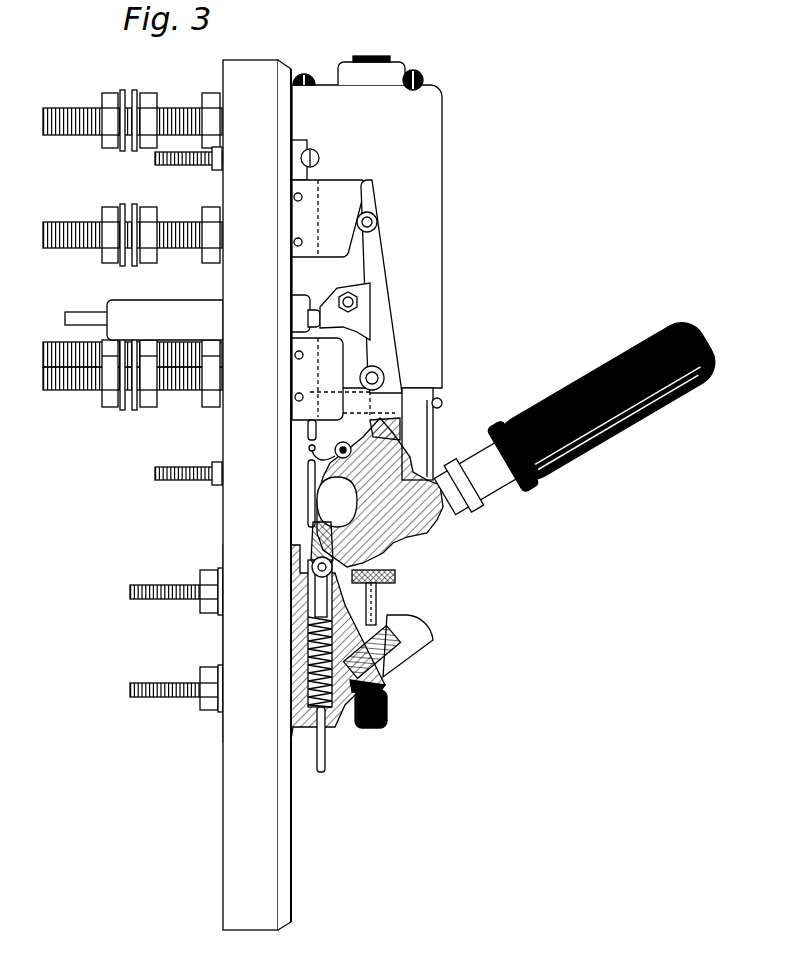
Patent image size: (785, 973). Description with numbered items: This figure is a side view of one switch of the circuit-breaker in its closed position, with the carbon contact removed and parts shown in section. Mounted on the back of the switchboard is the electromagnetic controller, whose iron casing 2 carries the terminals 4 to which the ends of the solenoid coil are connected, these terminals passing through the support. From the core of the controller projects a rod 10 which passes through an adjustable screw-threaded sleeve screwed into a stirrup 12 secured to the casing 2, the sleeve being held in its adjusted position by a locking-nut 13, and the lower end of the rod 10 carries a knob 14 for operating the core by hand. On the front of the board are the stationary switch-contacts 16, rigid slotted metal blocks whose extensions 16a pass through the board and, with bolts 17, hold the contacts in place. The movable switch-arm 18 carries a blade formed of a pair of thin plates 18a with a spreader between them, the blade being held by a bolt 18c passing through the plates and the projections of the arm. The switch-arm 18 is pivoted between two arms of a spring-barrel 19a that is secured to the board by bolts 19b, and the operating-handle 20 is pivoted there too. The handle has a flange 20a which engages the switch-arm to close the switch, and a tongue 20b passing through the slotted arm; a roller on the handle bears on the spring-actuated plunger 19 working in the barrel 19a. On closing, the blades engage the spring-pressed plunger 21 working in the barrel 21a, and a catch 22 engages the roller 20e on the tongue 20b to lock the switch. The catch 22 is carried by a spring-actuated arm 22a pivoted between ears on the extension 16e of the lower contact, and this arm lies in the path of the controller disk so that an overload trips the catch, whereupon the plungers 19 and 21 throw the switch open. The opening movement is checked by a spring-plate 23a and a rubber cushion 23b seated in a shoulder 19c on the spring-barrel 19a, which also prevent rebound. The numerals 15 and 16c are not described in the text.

The iron casing 2 is at (379, 236).
The terminals 4 is at (132, 240).
The rod 10 is at (378, 612).
The stirrup 12 is at (433, 437).
The locking-nut 13 is at (395, 552).
The knob 14 is at (371, 721).
The cap 15 is at (358, 61).
The stationary switch-contacts 16 is at (333, 188).
The extensions 16a is at (132, 254).
The pivot pin 16c is at (300, 463).
The extension of the lower stationary contact member 16e is at (308, 478).
The bolts 17 is at (188, 316).
The switch-arm 18 is at (391, 297).
The plates 18a is at (325, 307).
The bolt 18c is at (322, 300).
The spring-actuated plunger 19 is at (396, 578).
The spring-barrel 19a is at (375, 597).
The bolts 19b is at (176, 640).
The shoulder 19c is at (380, 681).
The operating-handle 20 is at (605, 402).
The flange or shoulder 20a is at (316, 560).
The tongue 20b is at (332, 493).
The roller 20e is at (309, 449).
The spring-pressed plunger 21 is at (308, 318).
The barrel 21a is at (144, 310).
The catch 22 is at (343, 432).
The spring-actuated arm 22a is at (395, 415).
The spring-plate 23a is at (417, 640).
The rubber cushion 23b is at (413, 660).